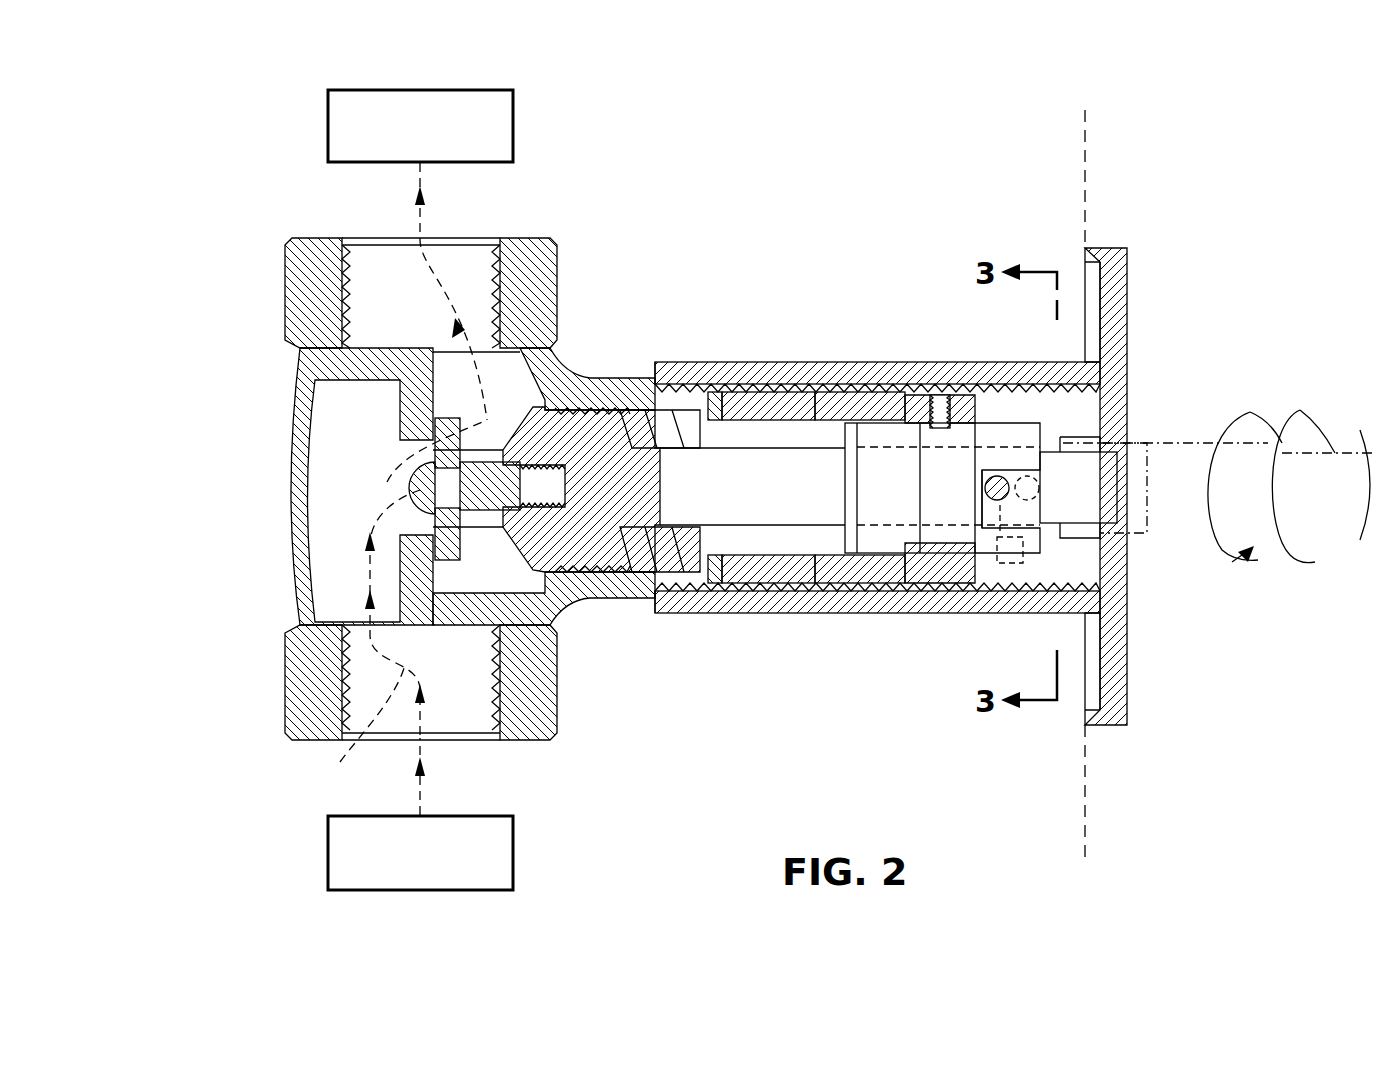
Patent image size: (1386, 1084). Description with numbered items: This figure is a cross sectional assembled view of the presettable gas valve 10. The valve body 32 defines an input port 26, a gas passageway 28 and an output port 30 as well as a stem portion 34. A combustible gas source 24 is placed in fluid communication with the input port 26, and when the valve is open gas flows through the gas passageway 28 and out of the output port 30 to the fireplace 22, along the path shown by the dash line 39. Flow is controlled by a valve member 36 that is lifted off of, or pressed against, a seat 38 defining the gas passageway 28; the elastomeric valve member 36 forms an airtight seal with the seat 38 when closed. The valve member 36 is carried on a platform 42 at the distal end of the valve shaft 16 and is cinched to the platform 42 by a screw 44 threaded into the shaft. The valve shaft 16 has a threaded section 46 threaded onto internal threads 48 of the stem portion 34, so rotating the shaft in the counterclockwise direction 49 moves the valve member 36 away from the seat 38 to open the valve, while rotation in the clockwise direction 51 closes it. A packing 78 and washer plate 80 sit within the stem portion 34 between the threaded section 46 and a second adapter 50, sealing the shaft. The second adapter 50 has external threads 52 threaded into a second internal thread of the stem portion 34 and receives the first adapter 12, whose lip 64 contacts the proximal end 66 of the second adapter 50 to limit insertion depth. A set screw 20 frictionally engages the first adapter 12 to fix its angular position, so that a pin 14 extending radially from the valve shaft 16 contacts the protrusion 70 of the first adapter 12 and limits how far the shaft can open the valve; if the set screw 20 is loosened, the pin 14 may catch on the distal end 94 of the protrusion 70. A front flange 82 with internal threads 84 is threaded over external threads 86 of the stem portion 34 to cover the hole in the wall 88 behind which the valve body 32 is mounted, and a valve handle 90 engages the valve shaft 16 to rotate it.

The presettable gas valve 10 is at (190, 236).
The first adapter 12 is at (890, 537).
The pin 14 is at (1024, 503).
The valve shaft 16 is at (773, 503).
The set screw 20 is at (940, 394).
The fireplace 22 is at (483, 93).
The combustible gas source 24 is at (483, 819).
The input port 26 is at (272, 625).
The gas passageway 28 is at (450, 470).
The output port 30 is at (272, 238).
The valve body 32 is at (412, 497).
The stem portion 34 is at (882, 675).
The valve member 36 is at (432, 422).
The seat 38 is at (435, 446).
The dash line 39 is at (351, 724).
The platform 42 is at (440, 548).
The screw 44 is at (433, 520).
The threaded section 46 is at (572, 418).
The internal threads 48 is at (624, 412).
The counterclockwise direction 49 is at (1215, 548).
The second adapter 50 is at (900, 382).
The clockwise direction 51 is at (1310, 414).
The external threads 52 is at (868, 365).
The lip 64 is at (996, 422).
The proximal end 66 is at (966, 422).
The protrusion 70 is at (1028, 422).
The packing 78 is at (748, 558).
The washer plate 80 is at (707, 580).
The front flange 82 is at (1112, 682).
The internal threads 84 is at (1003, 578).
The external threads 86 is at (800, 575).
The wall 88 is at (1085, 808).
The valve handle 90 is at (1178, 455).
The distal end 94 is at (1062, 430).